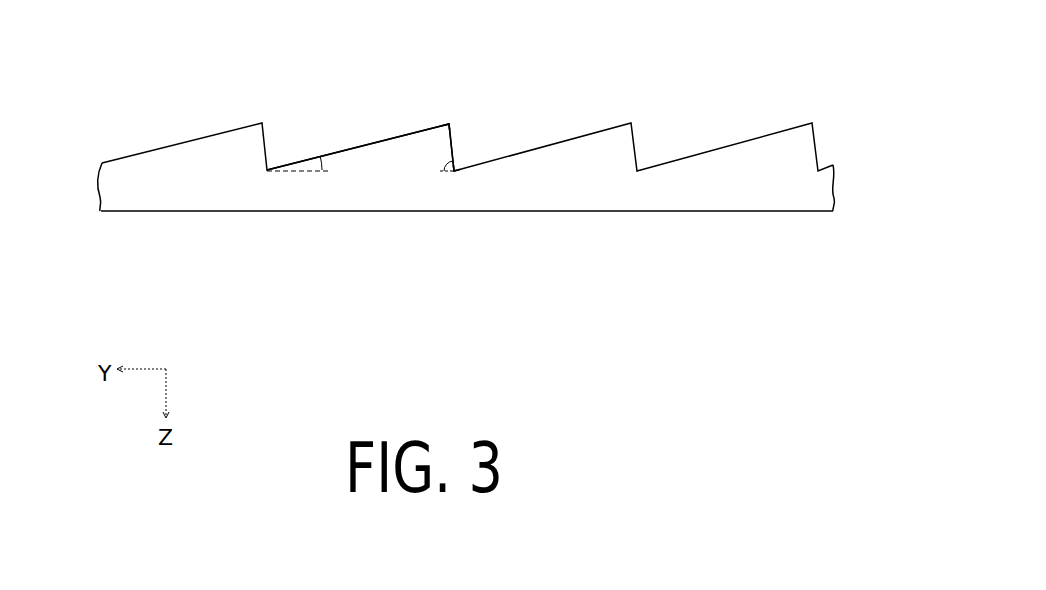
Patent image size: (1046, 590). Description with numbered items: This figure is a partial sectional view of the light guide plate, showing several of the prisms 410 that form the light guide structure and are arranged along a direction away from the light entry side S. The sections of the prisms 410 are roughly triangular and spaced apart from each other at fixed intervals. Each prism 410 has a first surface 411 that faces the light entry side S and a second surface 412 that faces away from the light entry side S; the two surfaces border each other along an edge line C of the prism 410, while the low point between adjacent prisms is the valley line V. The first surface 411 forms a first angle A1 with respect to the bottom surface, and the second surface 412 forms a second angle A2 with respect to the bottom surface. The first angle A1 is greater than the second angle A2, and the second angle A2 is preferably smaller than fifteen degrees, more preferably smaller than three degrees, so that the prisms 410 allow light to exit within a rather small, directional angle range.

The prism 410 is at (593, 150).
The first surface 411 is at (457, 140).
The second surface 412 is at (398, 134).
The edge line C is at (450, 122).
The valley line V is at (455, 173).
The first angle A1 is at (450, 162).
The second angle A2 is at (321, 160).
The light entry side S is at (863, 180).